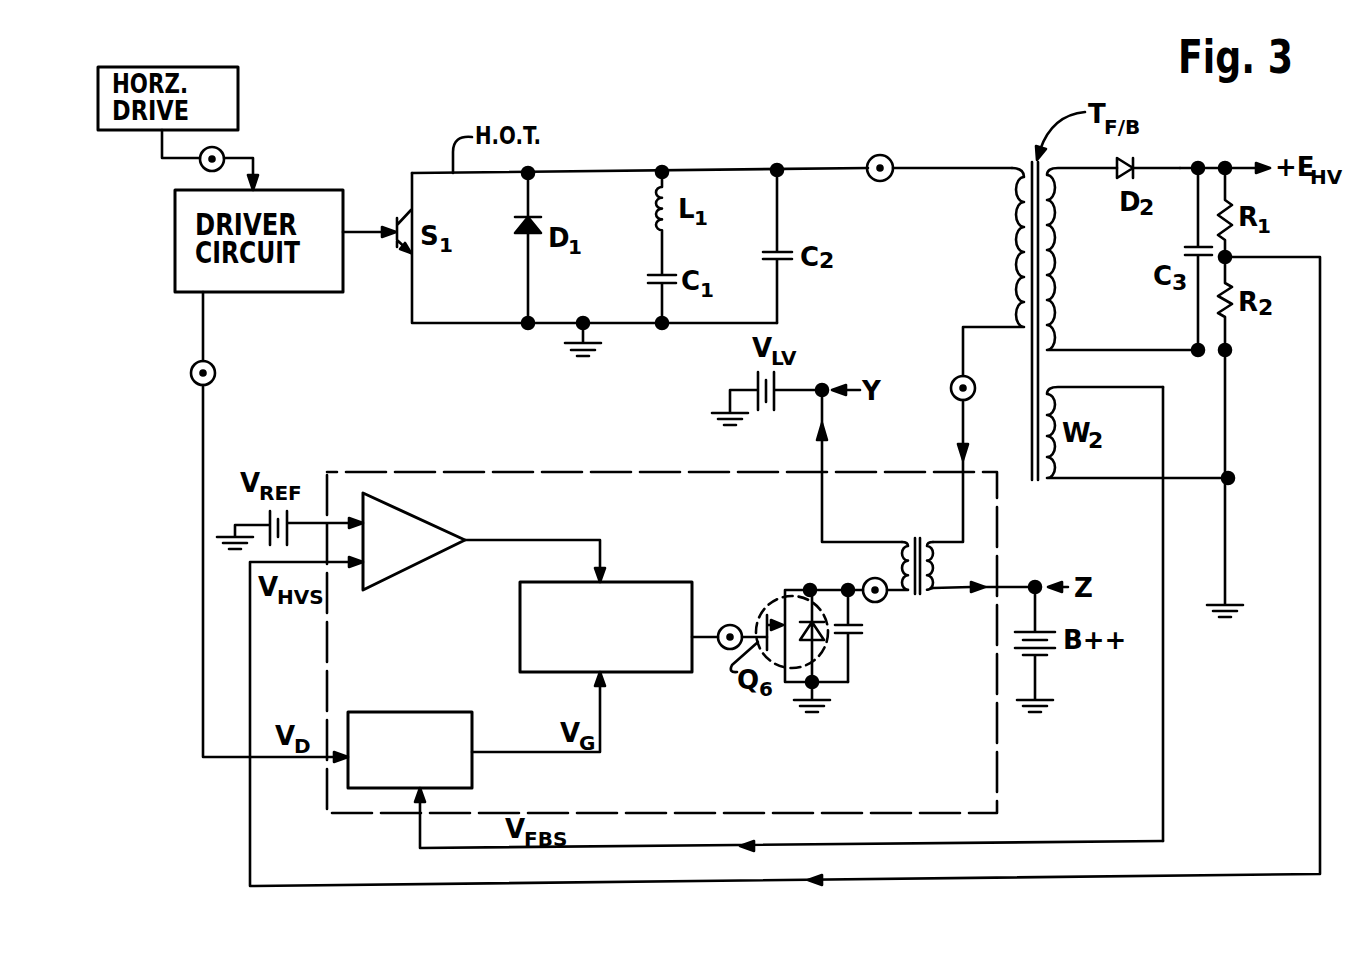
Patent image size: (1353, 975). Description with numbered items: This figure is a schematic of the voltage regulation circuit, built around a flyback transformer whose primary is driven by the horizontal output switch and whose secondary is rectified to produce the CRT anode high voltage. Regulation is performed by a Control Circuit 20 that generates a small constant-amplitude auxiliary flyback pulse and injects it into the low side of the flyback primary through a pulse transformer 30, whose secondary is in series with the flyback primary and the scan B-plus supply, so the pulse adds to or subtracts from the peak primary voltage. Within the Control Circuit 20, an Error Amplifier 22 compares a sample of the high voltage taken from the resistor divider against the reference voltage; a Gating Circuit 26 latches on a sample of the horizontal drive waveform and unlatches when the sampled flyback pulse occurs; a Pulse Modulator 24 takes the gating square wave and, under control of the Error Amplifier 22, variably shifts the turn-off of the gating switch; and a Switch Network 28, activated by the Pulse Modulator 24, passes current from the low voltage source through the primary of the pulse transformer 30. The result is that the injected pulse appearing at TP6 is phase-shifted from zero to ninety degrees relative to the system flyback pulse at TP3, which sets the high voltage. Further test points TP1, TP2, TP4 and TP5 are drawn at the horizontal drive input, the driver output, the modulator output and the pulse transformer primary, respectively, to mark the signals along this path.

The Control Circuit 20 is at (997, 764).
The Error Amplifier 22 is at (433, 548).
The Pulse Modulator 24 is at (670, 673).
The Gating Circuit 26 is at (470, 728).
The Switch Network 28 is at (858, 695).
The pulse transformer 30 is at (908, 544).
The test point 1 TP1 is at (220, 152).
The test point 2 TP2 is at (215, 372).
The system flyback pulse test point TP3 is at (884, 155).
The test point 4 TP4 is at (725, 626).
The test point 5 TP5 is at (880, 603).
The injected flyback pulse test point TP6 is at (951, 380).